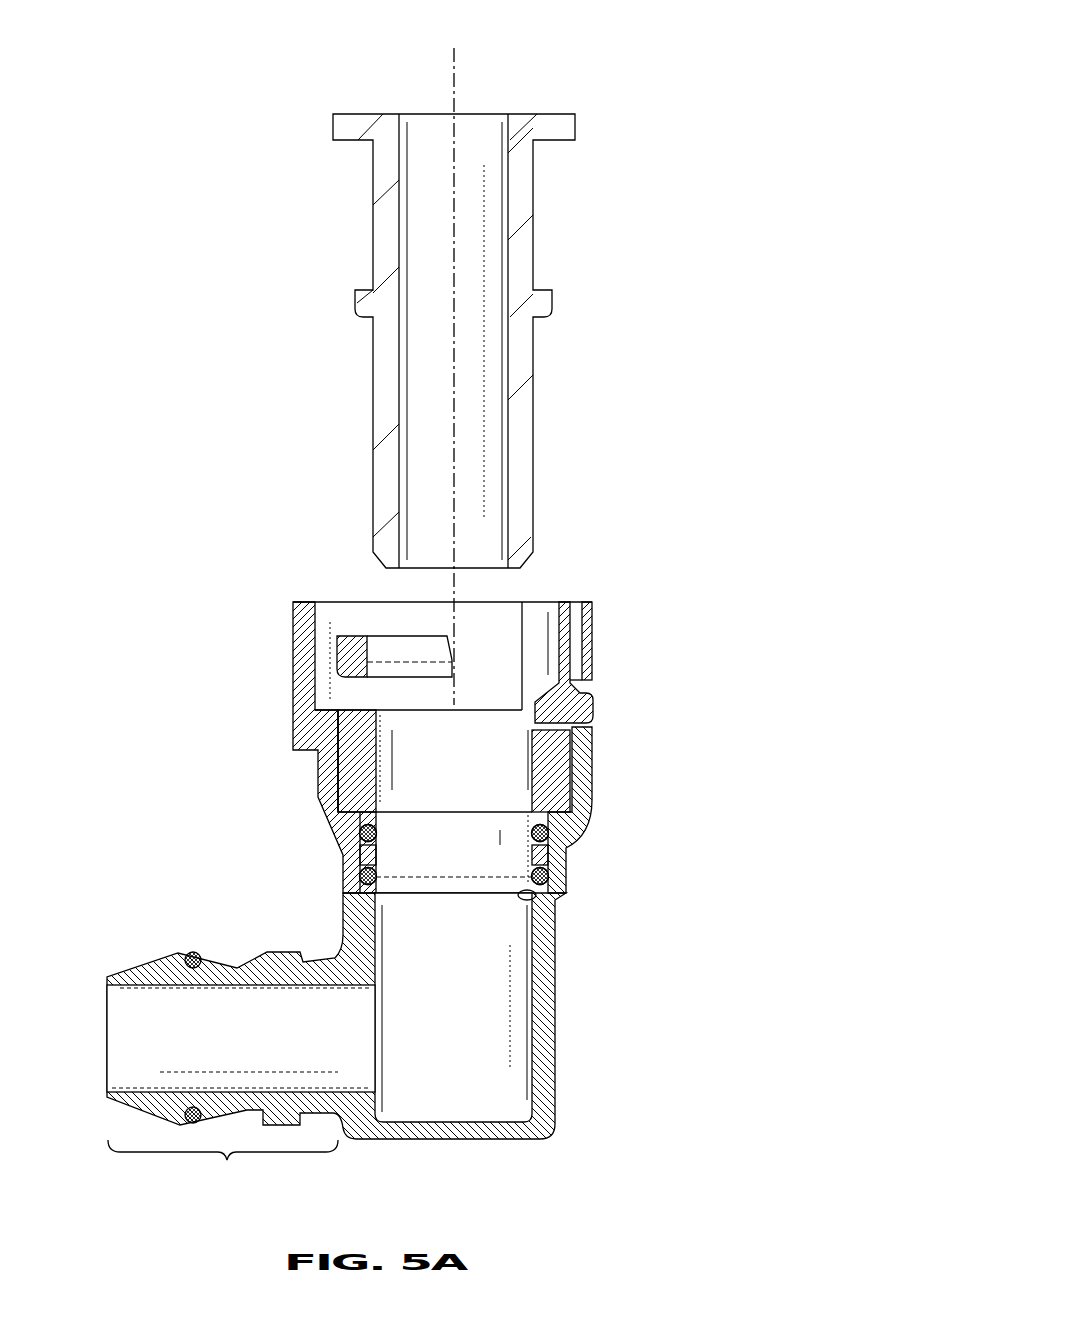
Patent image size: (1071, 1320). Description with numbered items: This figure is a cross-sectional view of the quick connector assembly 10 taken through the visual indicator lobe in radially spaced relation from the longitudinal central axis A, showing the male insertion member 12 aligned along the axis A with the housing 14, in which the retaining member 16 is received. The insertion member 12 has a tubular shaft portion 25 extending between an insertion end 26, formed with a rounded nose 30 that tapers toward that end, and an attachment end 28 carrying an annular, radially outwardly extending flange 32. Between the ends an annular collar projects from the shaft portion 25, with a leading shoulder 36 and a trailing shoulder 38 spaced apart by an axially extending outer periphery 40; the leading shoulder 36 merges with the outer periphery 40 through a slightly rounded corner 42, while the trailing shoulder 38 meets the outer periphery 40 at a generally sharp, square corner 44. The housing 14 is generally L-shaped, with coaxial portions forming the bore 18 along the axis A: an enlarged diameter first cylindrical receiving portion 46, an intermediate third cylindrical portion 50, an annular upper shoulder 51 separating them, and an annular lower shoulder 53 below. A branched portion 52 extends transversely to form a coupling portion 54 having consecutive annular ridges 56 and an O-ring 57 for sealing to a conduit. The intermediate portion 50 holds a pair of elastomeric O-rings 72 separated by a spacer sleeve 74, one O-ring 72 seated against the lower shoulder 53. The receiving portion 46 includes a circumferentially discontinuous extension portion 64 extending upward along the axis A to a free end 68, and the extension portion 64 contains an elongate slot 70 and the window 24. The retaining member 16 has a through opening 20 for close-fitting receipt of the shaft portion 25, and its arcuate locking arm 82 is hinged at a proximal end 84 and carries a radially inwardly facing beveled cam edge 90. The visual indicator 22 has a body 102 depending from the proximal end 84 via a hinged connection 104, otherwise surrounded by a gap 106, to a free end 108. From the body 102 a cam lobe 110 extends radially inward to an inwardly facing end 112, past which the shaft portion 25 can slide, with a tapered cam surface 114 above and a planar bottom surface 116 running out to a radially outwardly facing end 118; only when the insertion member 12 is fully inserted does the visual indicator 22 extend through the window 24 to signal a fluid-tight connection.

The quick connector assembly 10 is at (702, 112).
The male insertion member 12 is at (325, 125).
The housing 14 is at (270, 591).
The retaining member 16 is at (559, 590).
The bore 18 is at (488, 1105).
The through opening 20 is at (444, 846).
The visual indicator 22 is at (592, 733).
The window 24 is at (590, 683).
The tubular shaft portion 25 is at (535, 181).
The insertion end 26 is at (395, 569).
The attachment end 28 is at (360, 114).
The rounded nose 30 is at (384, 563).
The flange 32 is at (575, 128).
The leading shoulder 36 is at (588, 343).
The trailing shoulder 38 is at (592, 260).
The outer periphery 40 is at (555, 300).
The rounded corner 42 is at (553, 319).
The square corner 44 is at (550, 292).
The first cylindrical receiving portion 46 is at (586, 811).
The third cylindrical portion 50 is at (568, 868).
The upper shoulder 51 is at (337, 796).
The branched portion 52 is at (237, 966).
The lower shoulder 53 is at (566, 895).
The coupling portion 54 is at (223, 1162).
The annular ridges 56 is at (266, 952).
The O-ring 57 is at (193, 952).
The extension portion 64 is at (291, 606).
The free end 68 is at (584, 602).
The elongate slot 70 is at (402, 676).
The O-rings 72 is at (355, 830).
The spacer sleeve 74 is at (358, 862).
The locking arm 82 is at (339, 653).
The proximal end 84 is at (562, 601).
The beveled cam edge 90 is at (362, 646).
The body 102 is at (586, 660).
The hinged connection 104 is at (586, 636).
The gap 106 is at (535, 740).
The free end 108 is at (647, 769).
The cam lobe 110 is at (532, 723).
The radially inwardly facing end 112 is at (540, 714).
The tapered cam surface 114 is at (551, 692).
The bottom surface 116 is at (592, 770).
The radially outwardly facing end 118 is at (594, 706).
The longitudinal axis A is at (456, 97).